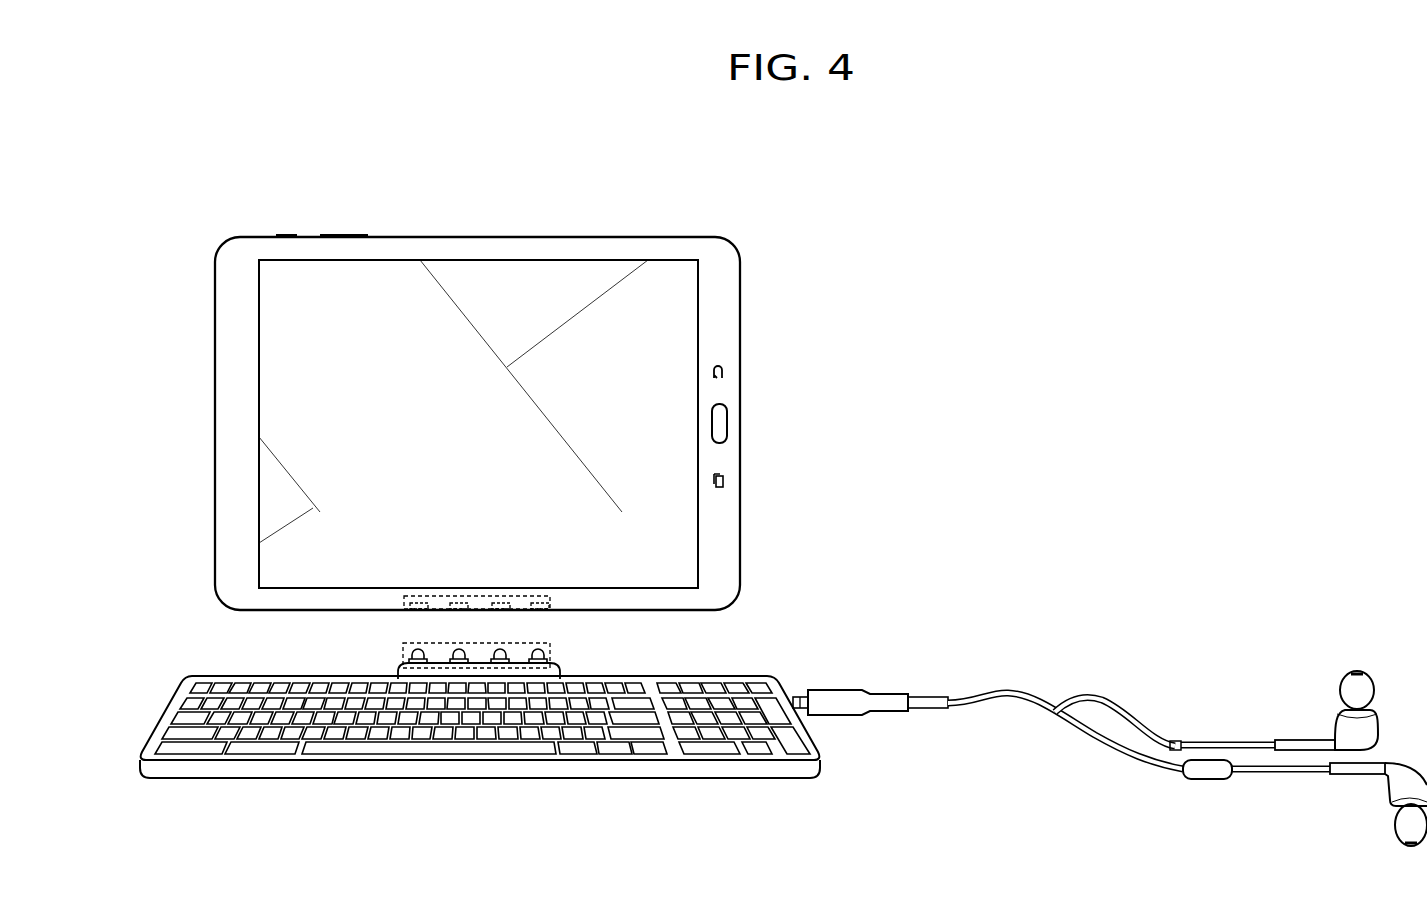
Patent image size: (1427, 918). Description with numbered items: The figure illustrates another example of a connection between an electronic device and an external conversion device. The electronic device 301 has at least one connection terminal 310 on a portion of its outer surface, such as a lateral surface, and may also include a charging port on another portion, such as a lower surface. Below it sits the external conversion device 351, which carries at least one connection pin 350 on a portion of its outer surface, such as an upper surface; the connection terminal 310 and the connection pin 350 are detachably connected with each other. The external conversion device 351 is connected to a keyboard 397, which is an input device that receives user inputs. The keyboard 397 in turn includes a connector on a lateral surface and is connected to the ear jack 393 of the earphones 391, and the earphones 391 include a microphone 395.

The electronic device 301 is at (192, 358).
The connection terminal 310 is at (404, 598).
The connection pin 350 is at (550, 643).
The external conversion device 351 is at (398, 666).
The earphones 391 is at (1068, 683).
The ear jack 393 is at (800, 697).
The microphone 395 is at (1207, 779).
The keyboard 397 is at (178, 712).